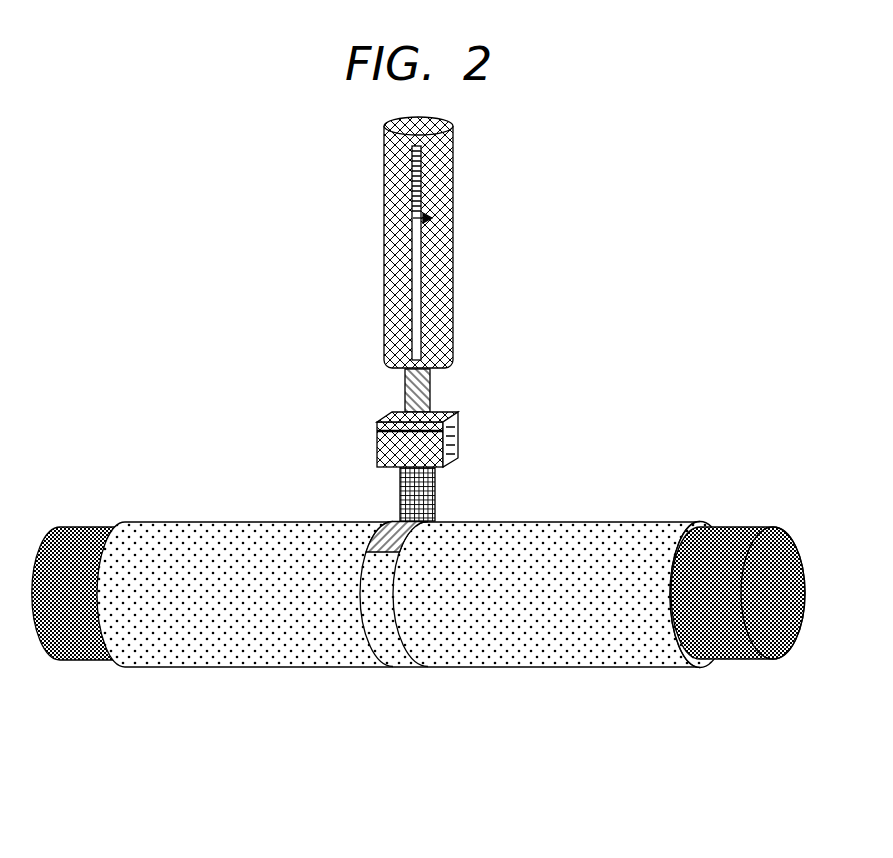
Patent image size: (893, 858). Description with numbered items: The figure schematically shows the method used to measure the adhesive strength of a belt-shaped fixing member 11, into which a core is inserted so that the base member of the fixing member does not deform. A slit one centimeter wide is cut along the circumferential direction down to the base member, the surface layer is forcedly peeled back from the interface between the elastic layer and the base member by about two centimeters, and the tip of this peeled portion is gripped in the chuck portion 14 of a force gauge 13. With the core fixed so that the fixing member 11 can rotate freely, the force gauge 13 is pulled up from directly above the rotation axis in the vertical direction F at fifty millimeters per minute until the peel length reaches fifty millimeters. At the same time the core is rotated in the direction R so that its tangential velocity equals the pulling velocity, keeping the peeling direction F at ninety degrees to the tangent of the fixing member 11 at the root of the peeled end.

The fixing member 11 is at (277, 522).
The force gauge 13 is at (384, 312).
The chuck portion 14 is at (458, 432).
The direction of peeling F is at (478, 185).
The rotation direction of the core R is at (543, 598).